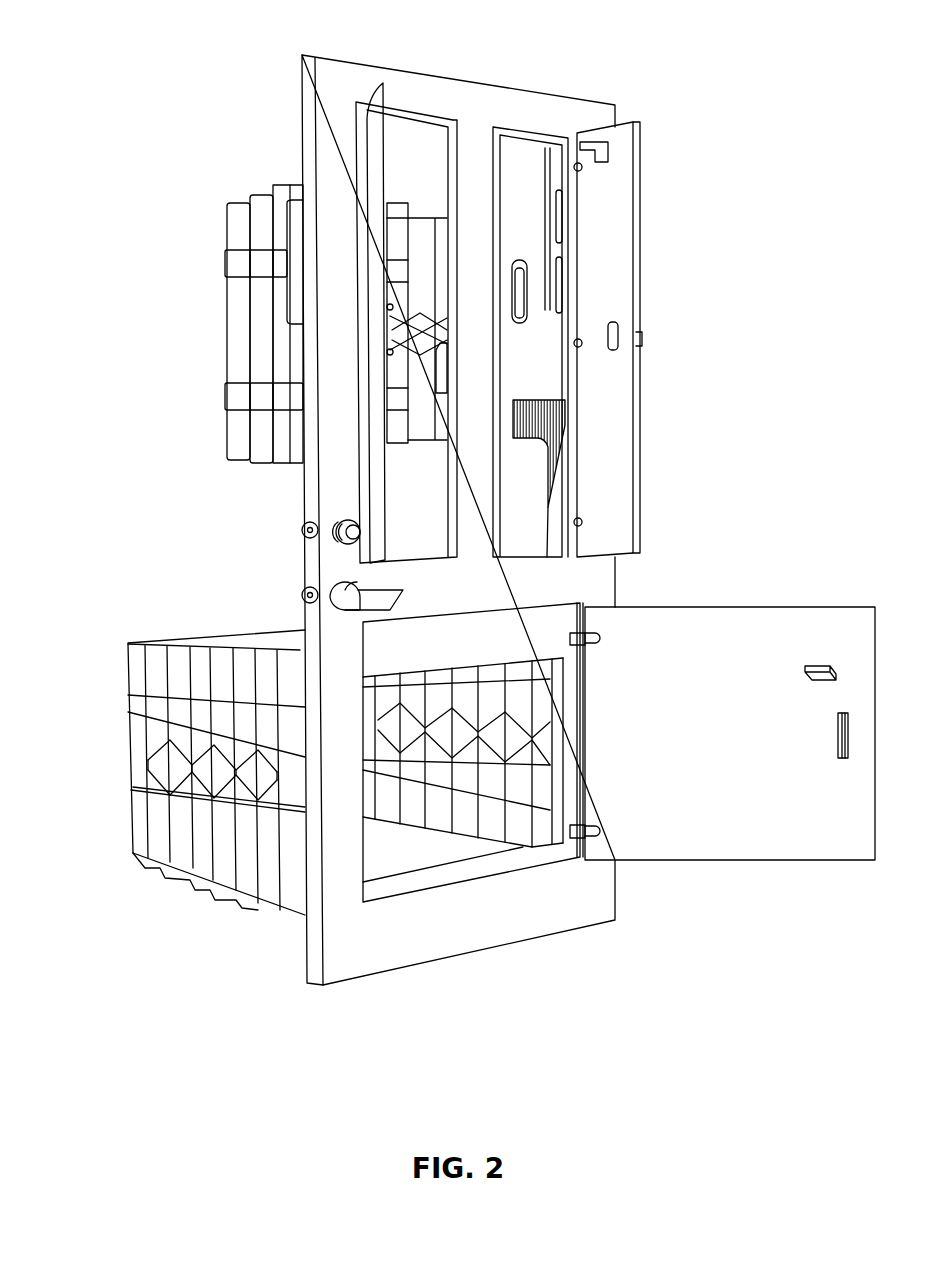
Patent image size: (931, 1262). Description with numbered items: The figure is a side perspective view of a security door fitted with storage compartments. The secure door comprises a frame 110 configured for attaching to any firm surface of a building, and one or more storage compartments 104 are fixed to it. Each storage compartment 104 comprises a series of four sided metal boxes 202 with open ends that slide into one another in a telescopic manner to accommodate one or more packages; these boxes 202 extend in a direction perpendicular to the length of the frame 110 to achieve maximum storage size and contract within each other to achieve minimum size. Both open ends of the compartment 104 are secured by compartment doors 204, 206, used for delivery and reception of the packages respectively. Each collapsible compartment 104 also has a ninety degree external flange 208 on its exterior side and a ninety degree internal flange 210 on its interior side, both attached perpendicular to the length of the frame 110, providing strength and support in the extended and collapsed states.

The frame 110 is at (493, 86).
The storage compartment 104 is at (273, 320).
The four sided metal boxes 202 is at (226, 665).
The compartment door 204 is at (768, 620).
The compartment door 206 is at (130, 735).
The external flange 208 is at (130, 787).
The internal flange 210 is at (557, 770).